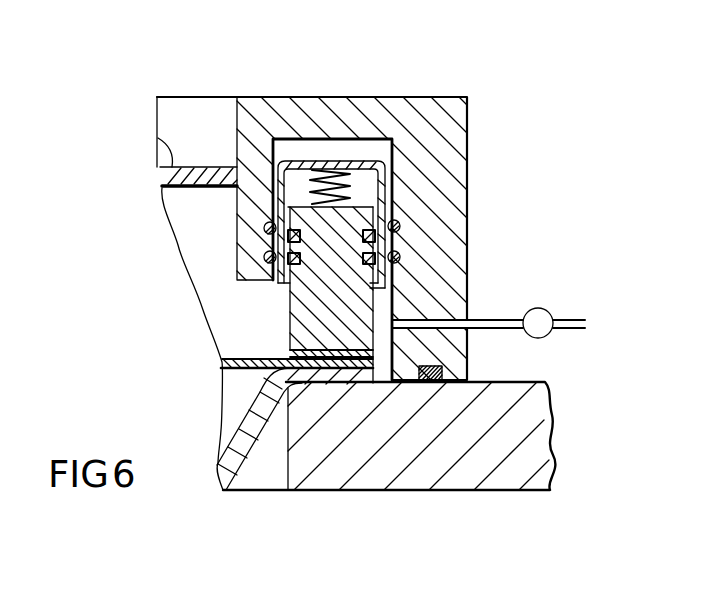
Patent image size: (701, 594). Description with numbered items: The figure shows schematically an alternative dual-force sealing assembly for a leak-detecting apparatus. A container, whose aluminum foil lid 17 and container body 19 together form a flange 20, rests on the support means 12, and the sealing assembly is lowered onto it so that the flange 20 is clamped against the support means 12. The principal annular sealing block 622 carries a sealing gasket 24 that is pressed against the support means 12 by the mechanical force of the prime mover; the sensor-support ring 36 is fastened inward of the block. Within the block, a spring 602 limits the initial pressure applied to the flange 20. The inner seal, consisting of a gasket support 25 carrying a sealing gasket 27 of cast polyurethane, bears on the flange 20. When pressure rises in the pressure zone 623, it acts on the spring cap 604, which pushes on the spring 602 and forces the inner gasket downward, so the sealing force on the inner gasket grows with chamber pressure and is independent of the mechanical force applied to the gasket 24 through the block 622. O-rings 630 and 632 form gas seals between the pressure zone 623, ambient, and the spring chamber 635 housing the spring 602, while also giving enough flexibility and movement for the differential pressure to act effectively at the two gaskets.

The support means 12 is at (452, 478).
The aluminum foil lid 17 is at (228, 361).
The container body 19 is at (318, 371).
The flange 20 is at (206, 388).
The sealing gasket 24 is at (426, 381).
The gasket support 25 is at (293, 307).
The sealing gasket 27 is at (292, 353).
The sensor-support ring 36 is at (157, 143).
The spring 602 is at (352, 180).
The spring cap 604 is at (311, 160).
The annular sealing block 622 is at (470, 152).
The pressure zone 623 is at (360, 148).
The O-ring 630 is at (292, 238).
The O-ring 632 is at (282, 246).
The spring chamber 635 is at (292, 182).